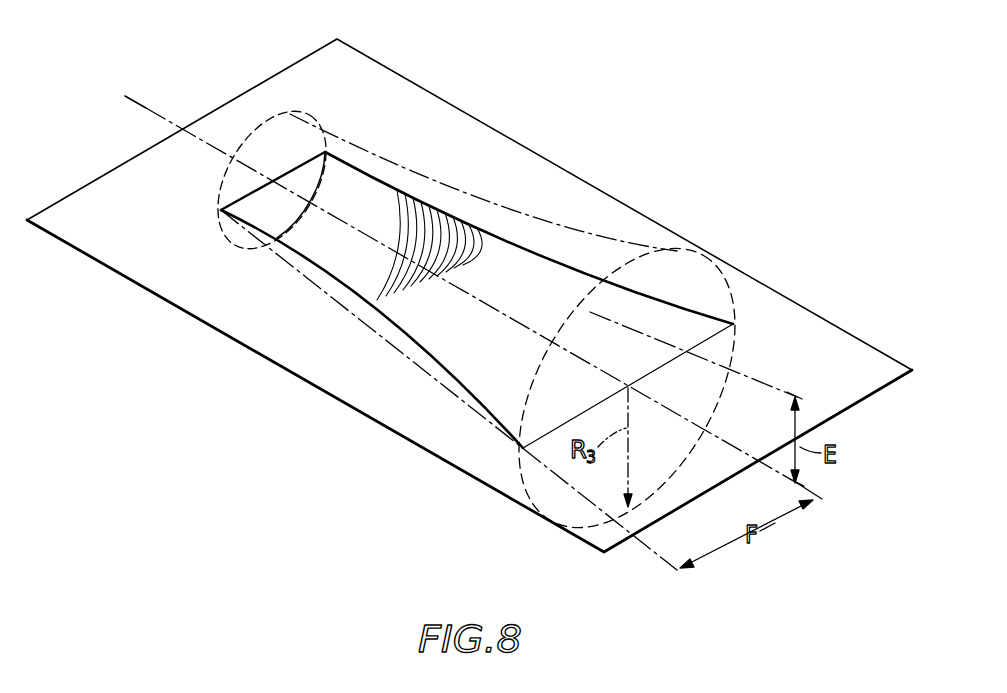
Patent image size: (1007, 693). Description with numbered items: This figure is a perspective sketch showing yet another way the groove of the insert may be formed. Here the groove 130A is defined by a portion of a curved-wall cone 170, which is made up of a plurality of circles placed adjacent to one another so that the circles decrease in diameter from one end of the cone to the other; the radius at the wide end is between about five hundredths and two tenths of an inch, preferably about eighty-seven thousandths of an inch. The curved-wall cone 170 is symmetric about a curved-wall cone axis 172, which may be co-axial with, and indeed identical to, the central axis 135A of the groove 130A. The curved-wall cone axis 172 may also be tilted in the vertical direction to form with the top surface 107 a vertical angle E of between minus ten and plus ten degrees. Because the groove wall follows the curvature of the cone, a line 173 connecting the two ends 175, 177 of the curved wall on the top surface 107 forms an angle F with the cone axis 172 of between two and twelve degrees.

The top surface 107 is at (403, 98).
The groove 130A is at (347, 269).
The central axis of the groove 135A is at (147, 107).
The curved-wall cone 170 is at (650, 253).
The curved-wall cone axis 172 is at (147, 107).
The line connecting the two ends of the curved wall 173 is at (420, 368).
The end of the curved wall 175 is at (221, 210).
The end of the curved wall 177 is at (523, 448).